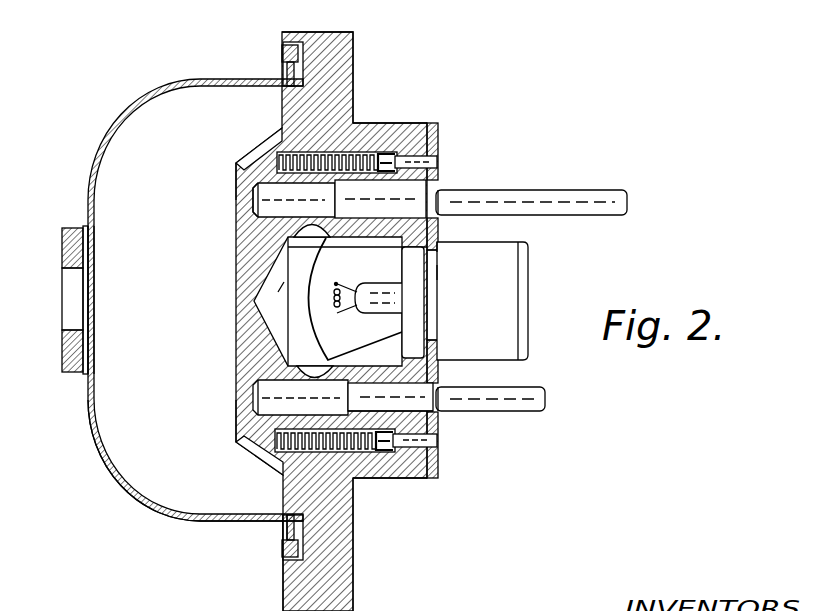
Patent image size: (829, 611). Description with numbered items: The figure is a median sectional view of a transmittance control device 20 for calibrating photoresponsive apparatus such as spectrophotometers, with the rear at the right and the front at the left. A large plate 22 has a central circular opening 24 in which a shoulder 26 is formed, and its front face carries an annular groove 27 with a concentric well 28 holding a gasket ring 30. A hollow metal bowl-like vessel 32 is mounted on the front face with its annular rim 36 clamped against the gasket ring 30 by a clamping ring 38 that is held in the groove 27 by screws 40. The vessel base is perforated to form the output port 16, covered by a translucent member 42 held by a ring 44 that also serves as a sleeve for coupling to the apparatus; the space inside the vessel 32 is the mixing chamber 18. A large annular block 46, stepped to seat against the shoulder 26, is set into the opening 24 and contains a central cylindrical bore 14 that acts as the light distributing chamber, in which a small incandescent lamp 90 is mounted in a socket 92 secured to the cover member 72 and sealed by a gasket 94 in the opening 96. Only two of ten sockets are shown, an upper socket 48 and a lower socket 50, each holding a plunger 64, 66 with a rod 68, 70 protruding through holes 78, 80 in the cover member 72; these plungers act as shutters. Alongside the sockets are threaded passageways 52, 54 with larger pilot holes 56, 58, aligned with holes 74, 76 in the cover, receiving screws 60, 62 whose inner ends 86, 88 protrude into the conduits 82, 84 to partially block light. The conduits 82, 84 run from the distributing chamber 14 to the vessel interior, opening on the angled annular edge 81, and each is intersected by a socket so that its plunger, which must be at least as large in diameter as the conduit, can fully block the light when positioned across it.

The central cylindrical bore 14 is at (395, 283).
The output port 16 is at (100, 268).
The mixing chamber 18 is at (157, 358).
The transmittance control device 20 is at (188, 77).
The plate 22 is at (354, 46).
The central circular opening 24 is at (357, 484).
The shoulder 26 is at (352, 478).
The annular groove 27 is at (285, 575).
The concentric well 28 is at (305, 520).
The gasket ring 30 is at (352, 538).
The bowl-like vessel 32 is at (120, 493).
The annular rim 36 is at (288, 508).
The clamping ring 38 is at (283, 531).
The screws 40 is at (282, 58).
The translucent member 42 is at (92, 318).
The ring 44 is at (62, 243).
The annular block 46 is at (362, 123).
The upper socket 48 is at (250, 186).
The lower socket 50 is at (407, 415).
The threaded passageway 52 is at (378, 150).
The threaded passageway 54 is at (270, 458).
The pilot hole 56 is at (412, 157).
The pilot hole 58 is at (437, 437).
The screw 60 is at (335, 180).
The screw 62 is at (273, 465).
The plunger 64 is at (333, 202).
The plunger 66 is at (250, 380).
The rod 68 is at (563, 192).
The rod 70 is at (545, 397).
The cover member 72 is at (437, 366).
The aligned hole 74 is at (440, 157).
The aligned hole 76 is at (423, 443).
The rod hole 78 is at (446, 191).
The rod hole 80 is at (432, 388).
The angled annular edge 81 is at (240, 155).
The conduit 82 is at (260, 150).
The conduit 84 is at (237, 405).
The adjusting device 86 is at (273, 165).
The adjusting device 88 is at (248, 453).
The incandescent lamp 90 is at (320, 277).
The socket 92 is at (490, 301).
The gasket 94 is at (433, 254).
The opening 96 is at (433, 275).